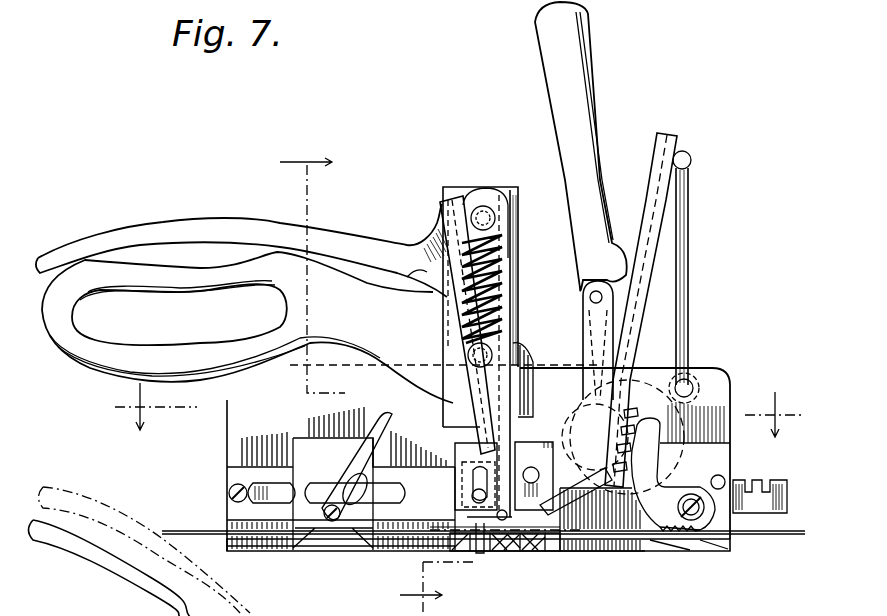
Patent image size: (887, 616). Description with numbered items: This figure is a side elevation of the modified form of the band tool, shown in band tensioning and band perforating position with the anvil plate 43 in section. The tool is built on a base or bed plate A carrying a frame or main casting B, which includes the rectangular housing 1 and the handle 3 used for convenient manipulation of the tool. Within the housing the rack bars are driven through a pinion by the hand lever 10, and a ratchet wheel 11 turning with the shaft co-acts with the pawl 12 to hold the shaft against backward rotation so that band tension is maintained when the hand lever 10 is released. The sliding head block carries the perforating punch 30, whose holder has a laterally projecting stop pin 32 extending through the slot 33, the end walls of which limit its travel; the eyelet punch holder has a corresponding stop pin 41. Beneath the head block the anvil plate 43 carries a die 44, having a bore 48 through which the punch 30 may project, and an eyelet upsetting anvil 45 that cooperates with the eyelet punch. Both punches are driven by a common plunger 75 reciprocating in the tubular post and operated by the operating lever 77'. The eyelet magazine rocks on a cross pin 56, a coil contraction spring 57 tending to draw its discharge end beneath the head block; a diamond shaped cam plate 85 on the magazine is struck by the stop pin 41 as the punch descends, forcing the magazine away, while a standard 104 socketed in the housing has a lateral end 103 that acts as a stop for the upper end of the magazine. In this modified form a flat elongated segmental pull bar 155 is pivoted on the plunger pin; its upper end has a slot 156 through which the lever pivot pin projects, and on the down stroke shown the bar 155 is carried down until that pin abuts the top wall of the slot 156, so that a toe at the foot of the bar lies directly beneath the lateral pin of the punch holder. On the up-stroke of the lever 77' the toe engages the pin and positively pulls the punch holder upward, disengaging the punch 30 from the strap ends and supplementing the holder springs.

The operating lever 77' is at (241, 237).
The handle 3 is at (149, 296).
The ratchet wheel 11 is at (378, 374).
The locking pawl 12 is at (464, 410).
The slot 156 is at (462, 213).
The segmental pull bar 155 is at (455, 226).
The hand lever 10 is at (586, 107).
The lateral end of standard 103 is at (691, 160).
The standard 104 is at (689, 292).
The cross pin 56 is at (590, 297).
The coil contraction spring 57 is at (611, 310).
The housing 1 is at (722, 380).
The base plate A is at (645, 551).
The frame B is at (341, 466).
The plunger 75 is at (460, 433).
The slot 33 is at (471, 477).
The stop pin 32 is at (472, 497).
The stop pin 41 is at (532, 467).
The diamond shaped cam plate 85 is at (558, 500).
The die 44 is at (476, 551).
The bore 48 is at (488, 556).
The eyelet upsetting anvil 45 is at (533, 551).
The anvil plate 43 is at (580, 551).
The perforating punch 30 is at (435, 533).